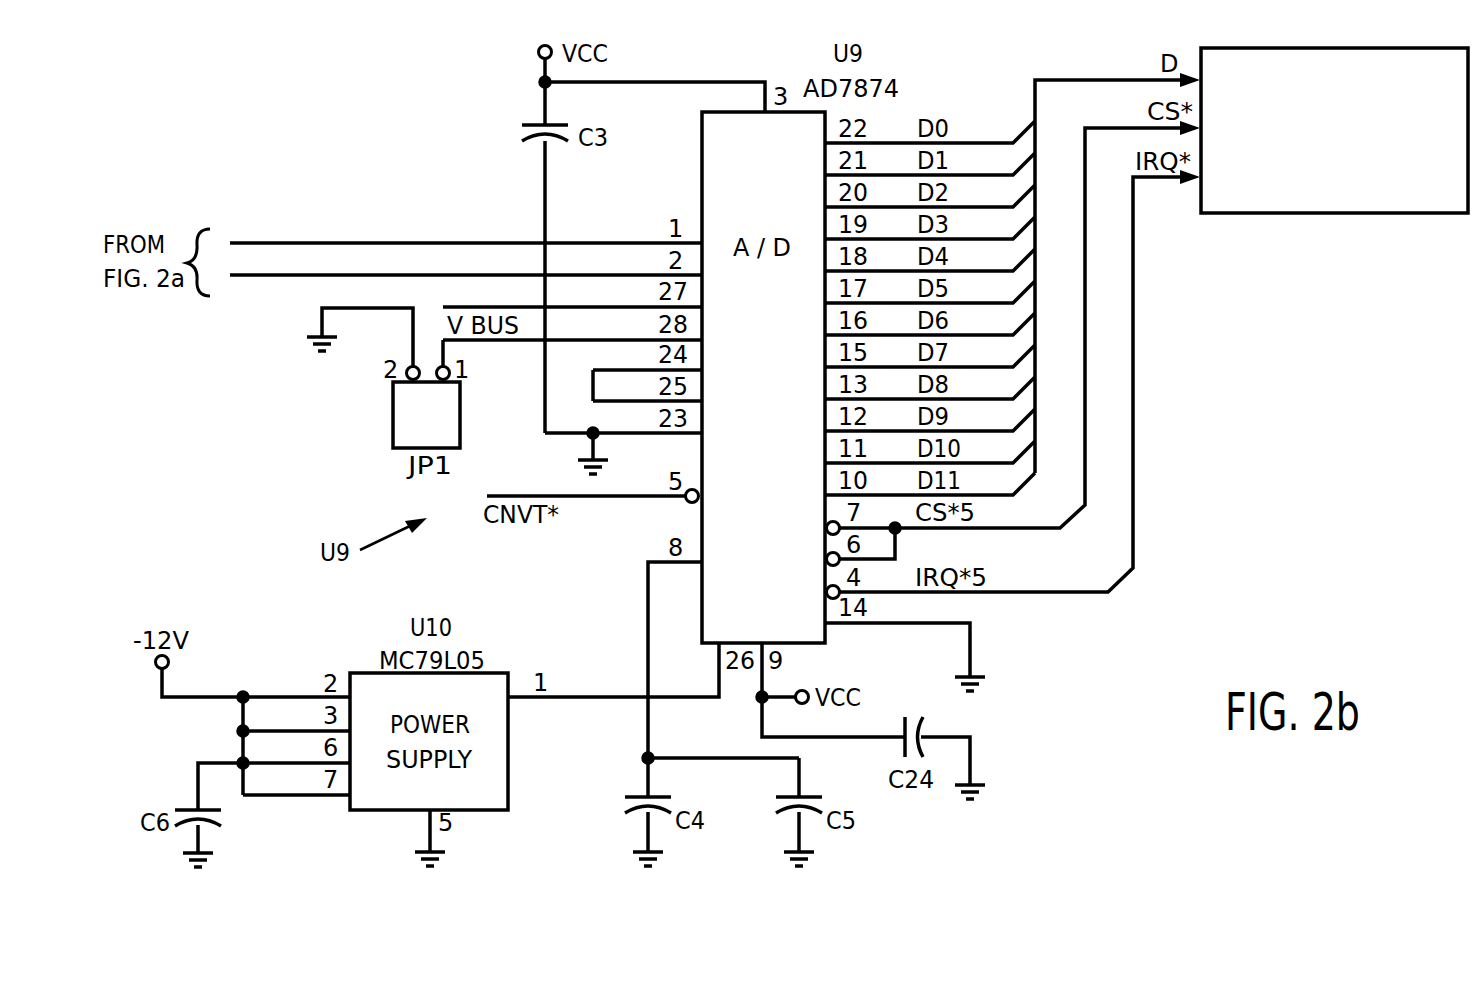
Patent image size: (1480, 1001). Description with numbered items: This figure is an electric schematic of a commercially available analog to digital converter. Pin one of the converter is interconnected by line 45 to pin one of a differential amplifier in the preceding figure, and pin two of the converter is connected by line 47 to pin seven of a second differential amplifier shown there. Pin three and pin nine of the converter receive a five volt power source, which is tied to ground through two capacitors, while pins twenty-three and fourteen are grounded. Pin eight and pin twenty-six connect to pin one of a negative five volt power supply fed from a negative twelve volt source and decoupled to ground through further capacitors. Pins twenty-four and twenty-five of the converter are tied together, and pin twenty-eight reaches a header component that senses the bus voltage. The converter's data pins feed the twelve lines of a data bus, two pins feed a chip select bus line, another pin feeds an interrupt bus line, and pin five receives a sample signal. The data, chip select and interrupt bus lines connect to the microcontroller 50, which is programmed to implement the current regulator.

The line 45 is at (262, 243).
The line 47 is at (260, 276).
The microcontroller 50 is at (1303, 215).